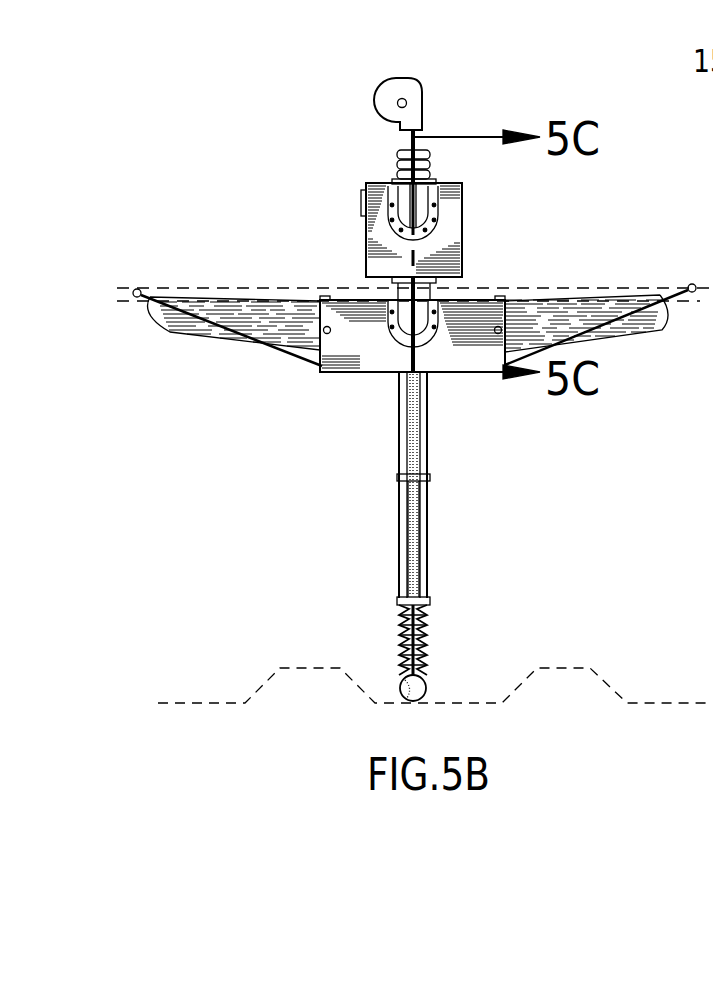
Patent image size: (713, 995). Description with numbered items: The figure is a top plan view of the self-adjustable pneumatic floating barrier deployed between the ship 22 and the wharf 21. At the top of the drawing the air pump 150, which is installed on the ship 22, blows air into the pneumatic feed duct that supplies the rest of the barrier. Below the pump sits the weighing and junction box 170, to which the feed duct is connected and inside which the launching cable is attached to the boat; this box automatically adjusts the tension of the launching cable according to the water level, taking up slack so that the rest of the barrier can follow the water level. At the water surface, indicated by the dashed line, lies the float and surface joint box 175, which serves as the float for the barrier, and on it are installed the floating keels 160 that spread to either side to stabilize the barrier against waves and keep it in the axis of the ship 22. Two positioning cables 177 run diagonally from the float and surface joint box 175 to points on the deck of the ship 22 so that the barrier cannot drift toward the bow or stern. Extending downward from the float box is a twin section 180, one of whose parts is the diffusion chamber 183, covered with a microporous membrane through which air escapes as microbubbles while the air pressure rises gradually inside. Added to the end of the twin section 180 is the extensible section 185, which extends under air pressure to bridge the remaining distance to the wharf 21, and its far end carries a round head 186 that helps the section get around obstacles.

The wharf 21 is at (548, 690).
The ship 22 is at (310, 237).
The air pump 150 is at (413, 88).
The floating keel 160 is at (222, 333).
The weighing and junction box 170 is at (440, 242).
The float and surface joint box 175 is at (360, 352).
The positioning cable 177 is at (278, 348).
The twin section 180 is at (430, 438).
The diffusion chamber 183 is at (430, 493).
The extensible section 185 is at (430, 630).
The round head 186 is at (428, 688).